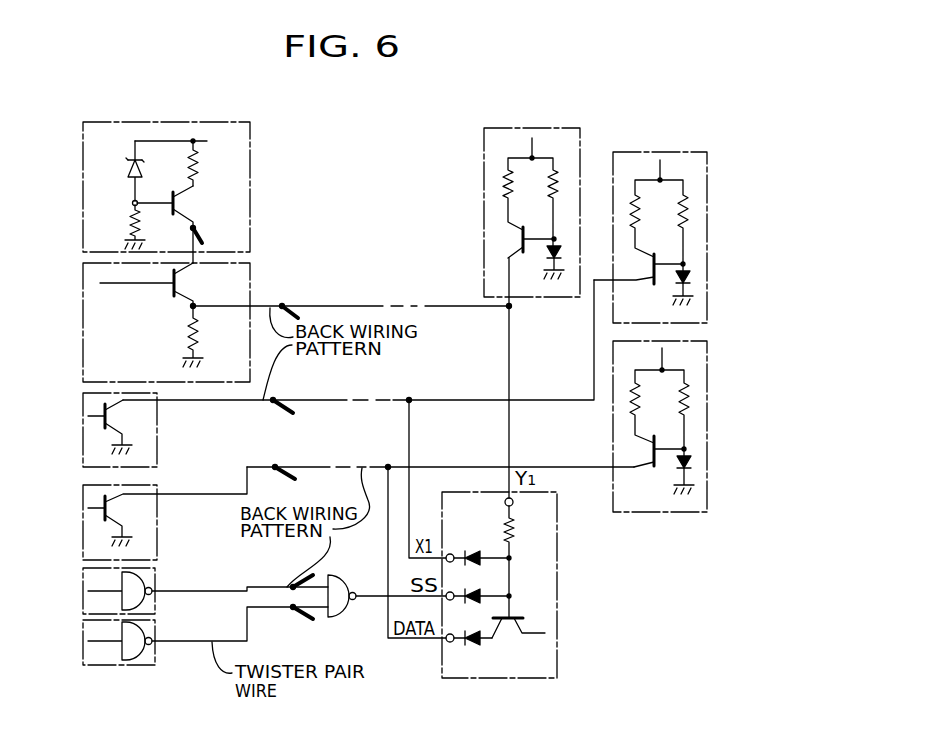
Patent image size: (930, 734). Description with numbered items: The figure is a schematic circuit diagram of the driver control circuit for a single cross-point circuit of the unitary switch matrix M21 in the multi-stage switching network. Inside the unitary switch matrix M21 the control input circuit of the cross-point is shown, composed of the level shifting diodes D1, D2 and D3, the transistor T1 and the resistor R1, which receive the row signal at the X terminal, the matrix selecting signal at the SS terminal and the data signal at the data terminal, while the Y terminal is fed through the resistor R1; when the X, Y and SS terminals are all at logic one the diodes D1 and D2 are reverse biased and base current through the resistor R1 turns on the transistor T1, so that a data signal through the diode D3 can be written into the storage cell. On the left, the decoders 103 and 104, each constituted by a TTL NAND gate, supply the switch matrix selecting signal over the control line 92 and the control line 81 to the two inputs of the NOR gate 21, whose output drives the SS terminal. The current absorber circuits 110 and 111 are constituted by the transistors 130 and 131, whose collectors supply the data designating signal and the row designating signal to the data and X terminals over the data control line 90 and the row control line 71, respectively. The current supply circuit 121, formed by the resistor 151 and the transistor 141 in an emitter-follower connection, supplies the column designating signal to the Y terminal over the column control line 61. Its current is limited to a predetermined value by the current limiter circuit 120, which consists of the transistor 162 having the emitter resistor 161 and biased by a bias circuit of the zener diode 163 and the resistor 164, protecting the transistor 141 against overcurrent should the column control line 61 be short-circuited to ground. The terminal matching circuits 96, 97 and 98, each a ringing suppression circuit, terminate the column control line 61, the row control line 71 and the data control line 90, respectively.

The current limiter circuit 120 is at (166, 170).
The zener diode 163 is at (128, 158).
The emitter resistor 161 is at (198, 165).
The transistor 162 is at (186, 203).
The resistor 164 is at (128, 221).
The current supply circuit 121 is at (188, 316).
The transistor 141 is at (184, 283).
The resistor 151 is at (198, 332).
The current absorber circuit 111 is at (143, 430).
The transistor 131 is at (109, 418).
The current absorber circuit 110 is at (140, 513).
The transistor 130 is at (118, 511).
The decoder 104 is at (155, 588).
The decoder 103 is at (157, 650).
The control line 81 is at (255, 587).
The control signal line 92 is at (217, 641).
The NOR gate 21 is at (337, 617).
The column control line 61 is at (338, 305).
The row control line 71 is at (319, 400).
The data control line 90 is at (315, 467).
The terminal matching circuit 96 is at (550, 128).
The terminal matching circuit 97 is at (665, 152).
The terminal matching circuit 98 is at (708, 435).
The unitary switch matrix M21 is at (531, 585).
The resistor R1 is at (513, 528).
The level shifting diode D1 is at (481, 543).
The level shifting diode D2 is at (483, 572).
The level shifting diode D3 is at (474, 616).
The transistor T1 is at (500, 628).